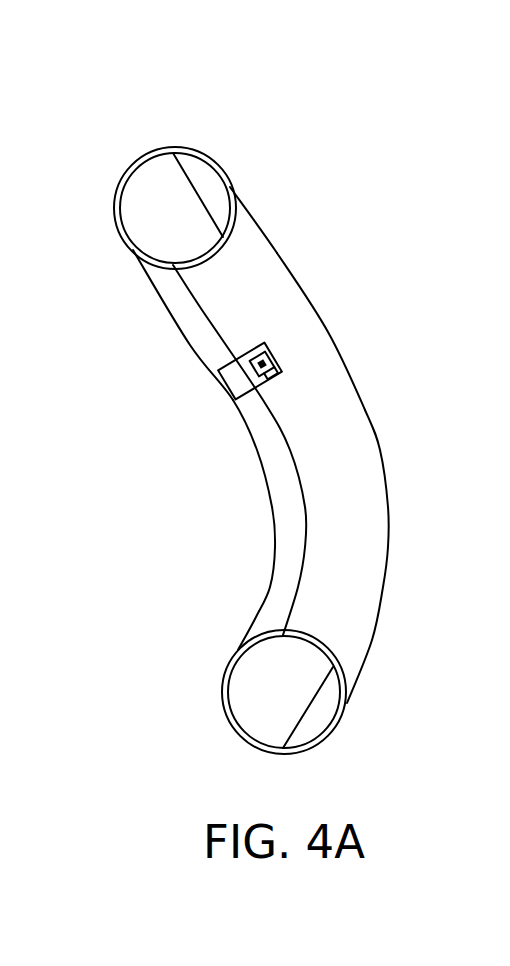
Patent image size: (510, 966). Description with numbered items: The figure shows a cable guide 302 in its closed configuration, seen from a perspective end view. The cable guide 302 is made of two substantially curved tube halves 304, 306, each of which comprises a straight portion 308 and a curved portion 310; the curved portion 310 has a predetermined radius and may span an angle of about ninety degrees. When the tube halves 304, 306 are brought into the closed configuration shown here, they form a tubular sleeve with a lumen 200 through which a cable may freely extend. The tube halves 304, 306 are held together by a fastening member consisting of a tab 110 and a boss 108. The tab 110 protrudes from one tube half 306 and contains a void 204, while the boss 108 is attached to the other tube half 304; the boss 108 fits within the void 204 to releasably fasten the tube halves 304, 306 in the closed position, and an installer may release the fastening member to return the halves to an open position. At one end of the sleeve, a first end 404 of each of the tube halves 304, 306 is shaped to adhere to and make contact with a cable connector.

The cable guide 302 is at (78, 70).
The first end 404 is at (154, 130).
The lumen 200 is at (256, 736).
The straight portion 308 is at (278, 253).
The tube half 304 is at (328, 328).
The tube half 306 is at (243, 423).
The curved portion 310 is at (273, 547).
The tab 110 is at (247, 352).
The boss 108 is at (277, 353).
The void 204 is at (262, 375).